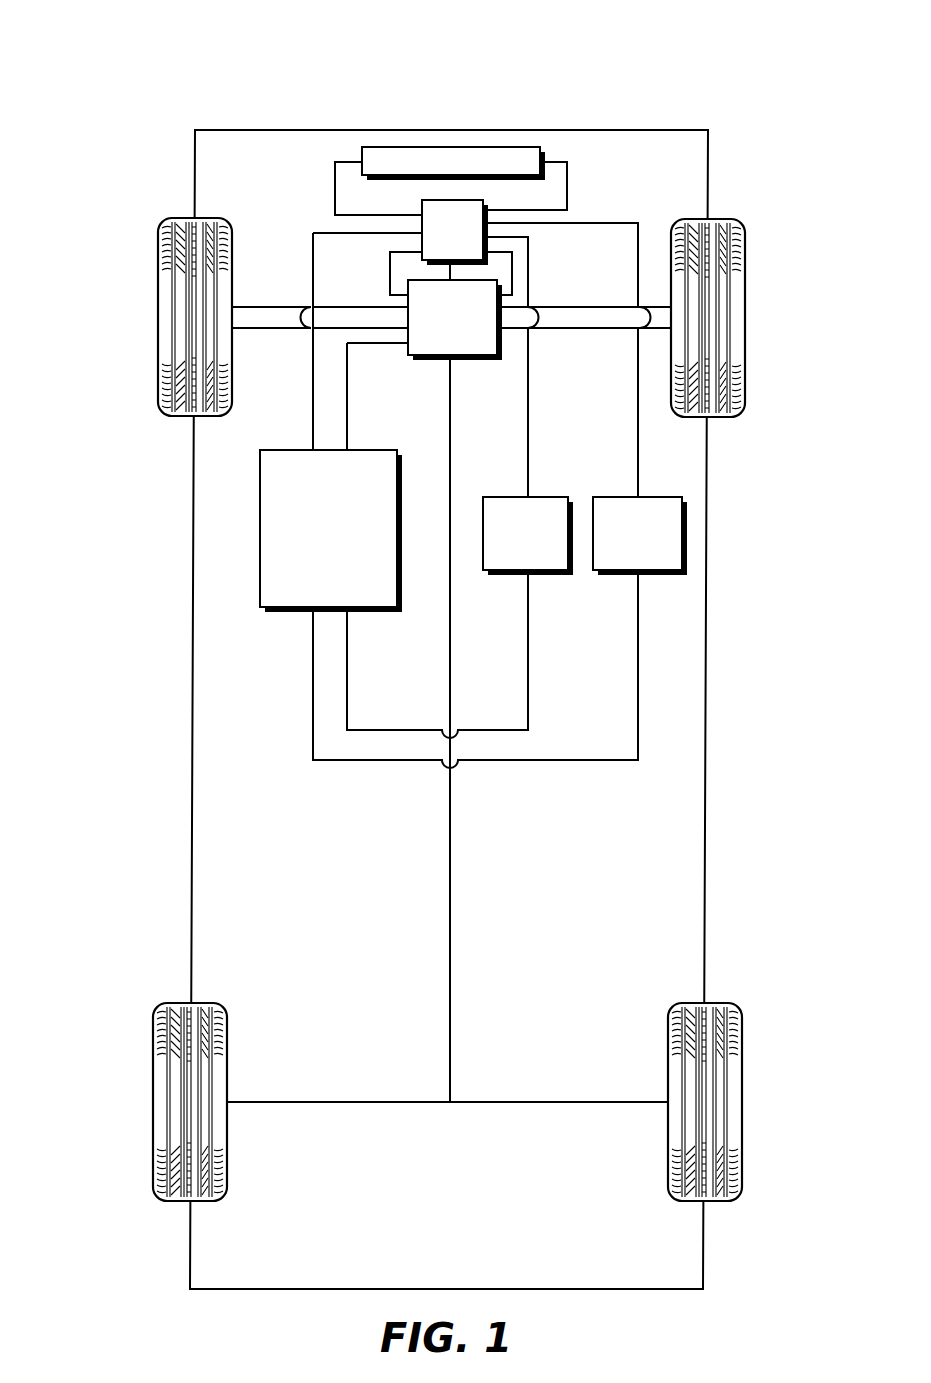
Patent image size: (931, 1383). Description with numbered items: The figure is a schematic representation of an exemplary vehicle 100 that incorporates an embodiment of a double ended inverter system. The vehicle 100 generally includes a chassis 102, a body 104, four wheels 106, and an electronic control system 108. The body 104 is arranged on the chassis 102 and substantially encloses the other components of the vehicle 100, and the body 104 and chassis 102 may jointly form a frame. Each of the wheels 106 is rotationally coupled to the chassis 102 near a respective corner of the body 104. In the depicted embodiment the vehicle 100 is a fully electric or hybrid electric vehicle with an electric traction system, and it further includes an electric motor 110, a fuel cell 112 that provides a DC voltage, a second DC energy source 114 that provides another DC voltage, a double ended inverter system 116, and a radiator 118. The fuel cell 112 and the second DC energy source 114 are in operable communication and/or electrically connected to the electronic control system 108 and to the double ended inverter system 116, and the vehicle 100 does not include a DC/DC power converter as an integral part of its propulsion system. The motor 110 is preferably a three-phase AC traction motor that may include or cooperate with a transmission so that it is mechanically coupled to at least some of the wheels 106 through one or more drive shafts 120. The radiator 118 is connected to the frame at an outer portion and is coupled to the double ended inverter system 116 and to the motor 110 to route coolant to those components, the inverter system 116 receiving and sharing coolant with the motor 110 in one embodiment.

The vehicle 100 is at (731, 47).
The chassis 102 is at (445, 970).
The body 104 is at (208, 528).
The wheels 106 is at (157, 272).
The electronic control system 108 is at (351, 542).
The electric motor 110 is at (472, 329).
The fuel cell 112 is at (506, 545).
The second DC energy source 114 is at (618, 545).
The double ended inverter system 116 is at (472, 241).
The radiator 118 is at (400, 147).
The drive shafts 120 is at (296, 306).